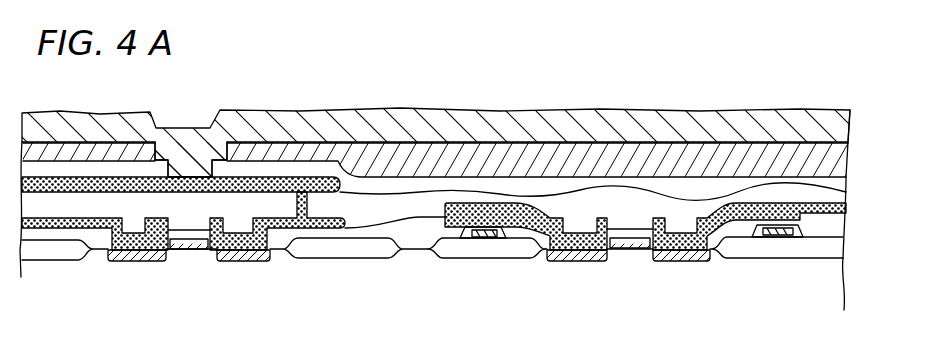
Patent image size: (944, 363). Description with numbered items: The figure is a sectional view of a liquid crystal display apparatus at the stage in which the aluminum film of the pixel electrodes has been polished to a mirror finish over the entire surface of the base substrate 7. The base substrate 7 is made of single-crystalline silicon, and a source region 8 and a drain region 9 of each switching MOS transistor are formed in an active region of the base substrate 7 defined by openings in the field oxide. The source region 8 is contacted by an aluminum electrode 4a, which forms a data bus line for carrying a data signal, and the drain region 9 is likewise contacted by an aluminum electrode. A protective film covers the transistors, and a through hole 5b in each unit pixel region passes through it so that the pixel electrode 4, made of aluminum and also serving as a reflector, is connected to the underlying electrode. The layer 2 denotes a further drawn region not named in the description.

The semiconductor substrate active region 2 is at (488, 248).
The pixel electrode 4 is at (590, 128).
The aluminum electrode 4a is at (266, 176).
The through hole 5b is at (188, 170).
The base substrate 7 is at (822, 284).
The source region 8 is at (133, 253).
The drain region 9 is at (242, 253).